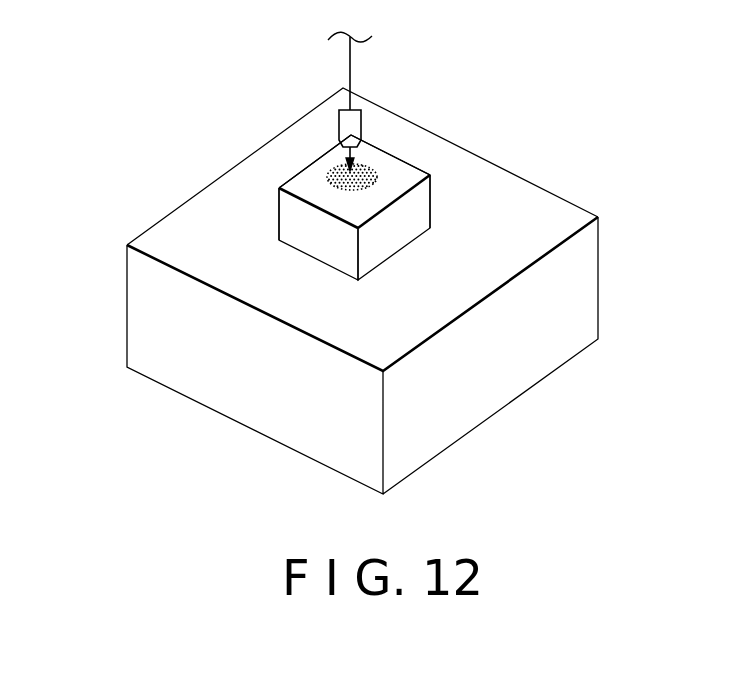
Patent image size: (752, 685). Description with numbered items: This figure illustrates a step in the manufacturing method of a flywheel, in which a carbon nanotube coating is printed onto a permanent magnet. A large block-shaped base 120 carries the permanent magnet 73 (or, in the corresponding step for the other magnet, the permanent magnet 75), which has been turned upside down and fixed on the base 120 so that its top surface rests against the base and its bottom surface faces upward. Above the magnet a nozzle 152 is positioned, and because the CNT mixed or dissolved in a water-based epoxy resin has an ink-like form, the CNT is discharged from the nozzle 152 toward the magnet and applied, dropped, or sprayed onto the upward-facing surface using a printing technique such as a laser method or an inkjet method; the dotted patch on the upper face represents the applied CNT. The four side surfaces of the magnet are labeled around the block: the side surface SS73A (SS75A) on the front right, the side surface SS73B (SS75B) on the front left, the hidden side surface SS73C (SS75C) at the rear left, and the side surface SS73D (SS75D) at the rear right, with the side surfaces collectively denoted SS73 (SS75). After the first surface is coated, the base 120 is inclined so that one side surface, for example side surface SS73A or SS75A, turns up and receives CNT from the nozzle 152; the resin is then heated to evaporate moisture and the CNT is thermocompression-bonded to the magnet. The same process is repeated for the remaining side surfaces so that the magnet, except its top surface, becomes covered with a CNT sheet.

The base 120 is at (190, 242).
The permanent magnet 73 is at (347, 229).
The permanent magnet 75 is at (347, 229).
The nozzle 152 is at (353, 123).
The element CNT is at (360, 172).
The side surface SS73 is at (406, 192).
The side surface SS75 is at (382, 190).
The side surface SS73A is at (436, 283).
The side surface SS75A is at (397, 230).
The side surface SS73B is at (273, 289).
The side surface SS75B is at (322, 240).
The side surface SS73C is at (221, 186).
The side surface SS75C is at (322, 134).
The side surface SS73D is at (476, 172).
The side surface SS75D is at (413, 165).